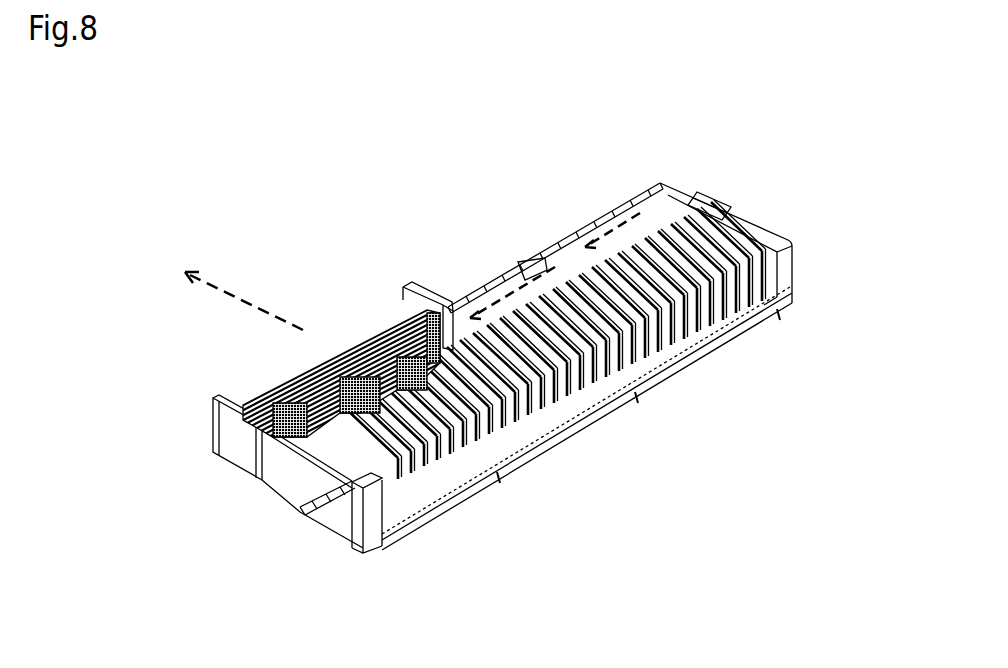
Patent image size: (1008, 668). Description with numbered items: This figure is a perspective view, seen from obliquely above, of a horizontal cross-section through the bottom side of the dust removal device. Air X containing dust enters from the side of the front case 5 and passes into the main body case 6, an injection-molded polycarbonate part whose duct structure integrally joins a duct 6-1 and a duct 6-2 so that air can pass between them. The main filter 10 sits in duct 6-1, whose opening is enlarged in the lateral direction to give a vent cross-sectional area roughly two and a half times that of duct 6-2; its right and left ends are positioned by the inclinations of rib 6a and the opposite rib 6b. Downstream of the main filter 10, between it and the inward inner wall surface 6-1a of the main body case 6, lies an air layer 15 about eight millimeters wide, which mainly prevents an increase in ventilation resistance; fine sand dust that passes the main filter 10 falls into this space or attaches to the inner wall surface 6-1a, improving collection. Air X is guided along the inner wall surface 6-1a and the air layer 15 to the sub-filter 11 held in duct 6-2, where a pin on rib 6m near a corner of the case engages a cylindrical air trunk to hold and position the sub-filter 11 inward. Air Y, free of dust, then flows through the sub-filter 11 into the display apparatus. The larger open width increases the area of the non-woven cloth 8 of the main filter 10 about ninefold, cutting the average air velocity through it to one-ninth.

The front case 5 is at (790, 238).
The main body case 6 is at (490, 292).
The rib 6a is at (722, 210).
The rib 6b is at (277, 437).
The rib 6m is at (418, 293).
The duct 6-1 is at (372, 573).
The inward inner wall surface 6-1a is at (527, 270).
The duct 6-2 is at (262, 508).
The non-woven cloth 8 is at (660, 343).
The main filter 10 is at (533, 403).
The sub-filter 11 is at (283, 383).
The air layer 15 is at (555, 268).
The air X is at (520, 487).
The air Y is at (247, 303).